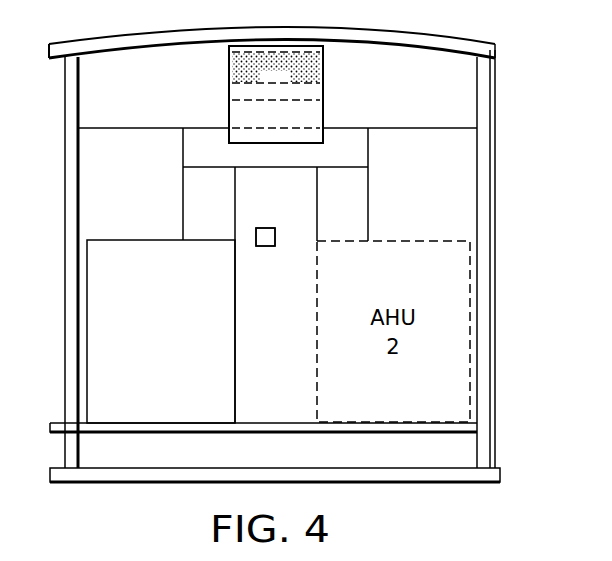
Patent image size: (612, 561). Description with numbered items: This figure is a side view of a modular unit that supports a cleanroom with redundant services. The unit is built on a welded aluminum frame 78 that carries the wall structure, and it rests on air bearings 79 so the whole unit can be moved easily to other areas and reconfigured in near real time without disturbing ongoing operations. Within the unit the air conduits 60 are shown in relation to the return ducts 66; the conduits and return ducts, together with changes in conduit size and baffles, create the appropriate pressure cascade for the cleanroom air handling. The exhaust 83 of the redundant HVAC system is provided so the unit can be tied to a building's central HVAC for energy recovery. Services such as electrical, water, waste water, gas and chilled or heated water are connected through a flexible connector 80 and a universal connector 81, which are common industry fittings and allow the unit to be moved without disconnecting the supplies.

The conduits 60 is at (290, 128).
The return ducts 66 is at (323, 72).
The welded aluminum frame 78 is at (500, 472).
The air bearings 79 is at (68, 483).
The flexible connector 80 is at (264, 252).
The universal connector 81 is at (289, 228).
The exhaust 83 is at (150, 240).